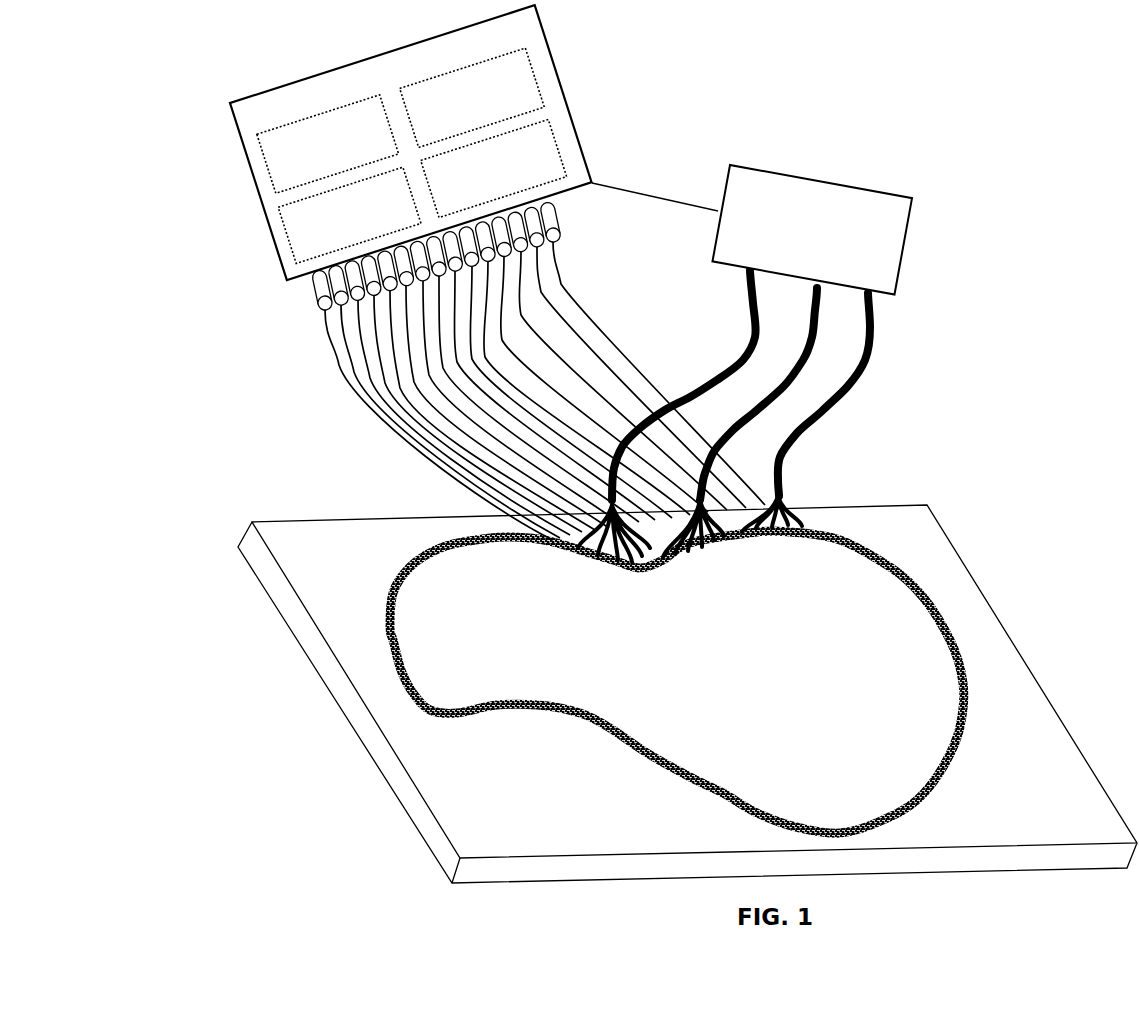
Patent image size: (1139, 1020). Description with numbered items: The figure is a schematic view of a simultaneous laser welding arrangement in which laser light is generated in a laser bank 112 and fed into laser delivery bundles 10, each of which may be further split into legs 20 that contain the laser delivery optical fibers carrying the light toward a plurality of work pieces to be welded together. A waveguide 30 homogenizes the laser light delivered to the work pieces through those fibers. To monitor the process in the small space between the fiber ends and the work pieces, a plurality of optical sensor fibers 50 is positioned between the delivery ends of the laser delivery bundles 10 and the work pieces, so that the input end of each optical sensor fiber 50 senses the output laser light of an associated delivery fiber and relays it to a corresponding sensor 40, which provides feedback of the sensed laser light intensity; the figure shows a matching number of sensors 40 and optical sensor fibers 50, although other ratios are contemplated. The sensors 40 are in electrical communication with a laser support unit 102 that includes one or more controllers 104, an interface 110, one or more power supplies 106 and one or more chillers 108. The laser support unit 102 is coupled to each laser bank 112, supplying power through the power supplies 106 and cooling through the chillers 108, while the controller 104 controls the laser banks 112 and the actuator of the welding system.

The laser delivery bundle 10 is at (857, 380).
The leg 20 is at (766, 503).
The waveguide 30 is at (938, 610).
The sensor 40 is at (317, 310).
The optical sensor fiber 50 is at (610, 327).
The laser support unit 102 is at (545, 22).
The controller 104 is at (262, 163).
The power supply 106 is at (288, 238).
The chiller 108 is at (557, 147).
The interface 110 is at (532, 70).
The laser bank 112 is at (907, 228).